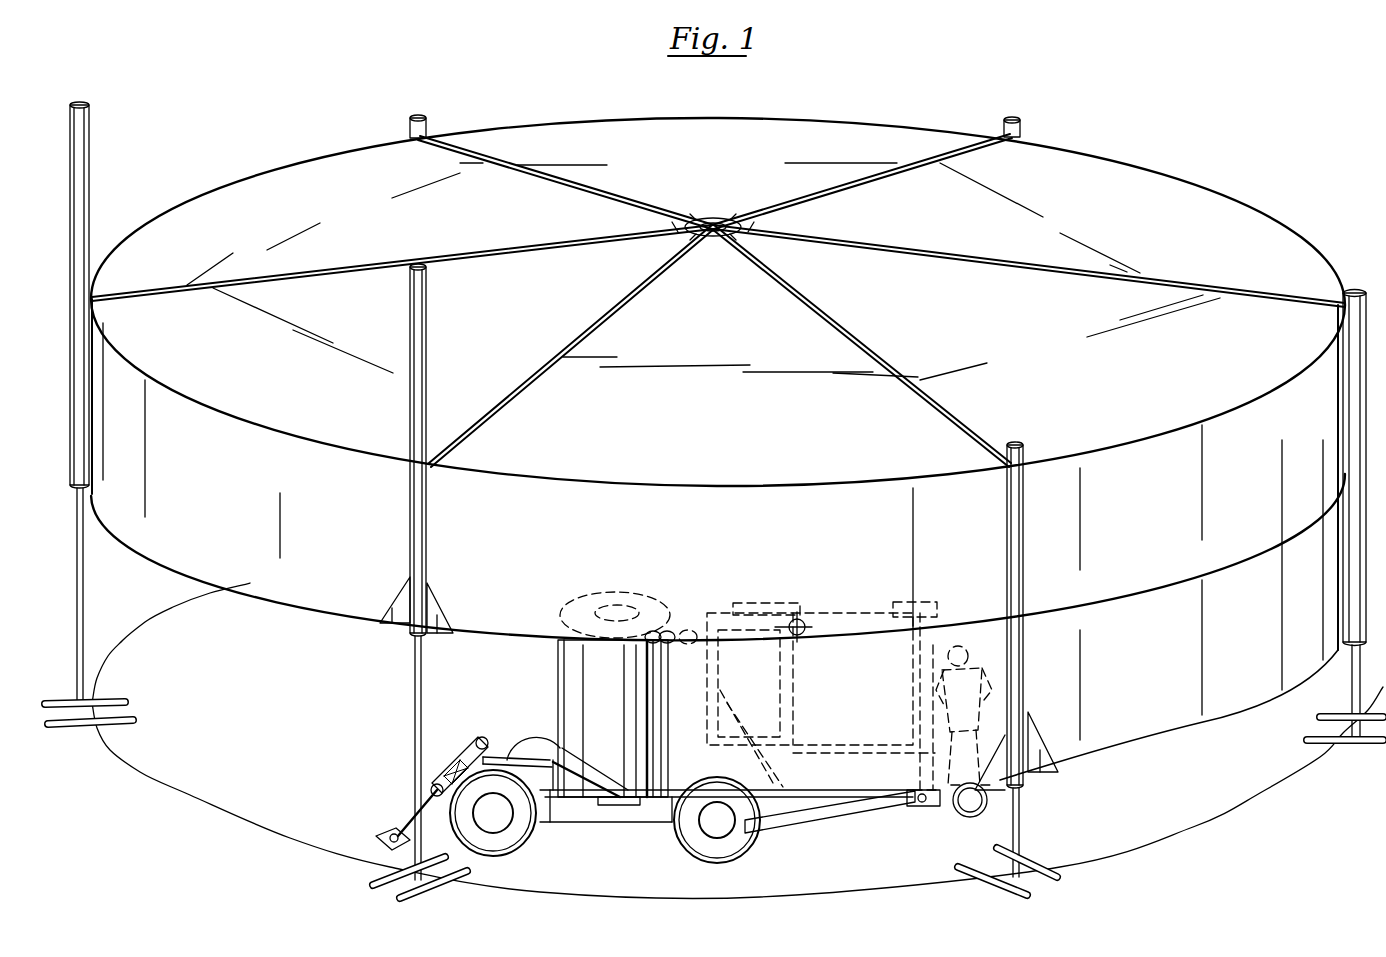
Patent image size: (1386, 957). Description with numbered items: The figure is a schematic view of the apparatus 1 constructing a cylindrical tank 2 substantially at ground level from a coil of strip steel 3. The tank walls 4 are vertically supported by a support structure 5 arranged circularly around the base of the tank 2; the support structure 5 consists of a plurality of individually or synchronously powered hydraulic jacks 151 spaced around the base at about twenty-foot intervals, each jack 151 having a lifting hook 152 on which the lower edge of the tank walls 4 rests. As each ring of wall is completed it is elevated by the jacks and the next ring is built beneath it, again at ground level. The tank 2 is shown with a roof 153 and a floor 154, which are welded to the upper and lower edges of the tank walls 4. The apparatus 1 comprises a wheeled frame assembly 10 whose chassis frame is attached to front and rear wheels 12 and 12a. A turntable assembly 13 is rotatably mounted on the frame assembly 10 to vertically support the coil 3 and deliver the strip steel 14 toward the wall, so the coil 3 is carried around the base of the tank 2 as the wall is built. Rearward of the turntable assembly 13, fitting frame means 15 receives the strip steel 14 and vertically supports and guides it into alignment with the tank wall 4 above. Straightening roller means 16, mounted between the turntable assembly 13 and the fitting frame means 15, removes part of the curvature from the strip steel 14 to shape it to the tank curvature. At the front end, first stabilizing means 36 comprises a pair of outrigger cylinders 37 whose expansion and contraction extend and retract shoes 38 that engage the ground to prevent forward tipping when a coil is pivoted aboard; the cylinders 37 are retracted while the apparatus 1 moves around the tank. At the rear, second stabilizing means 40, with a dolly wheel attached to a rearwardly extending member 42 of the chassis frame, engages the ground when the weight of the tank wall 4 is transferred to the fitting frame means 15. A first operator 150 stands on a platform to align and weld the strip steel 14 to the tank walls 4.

The apparatus 1 is at (862, 605).
The cylindrical tank 2 is at (286, 141).
The coil of strip steel 3 is at (594, 604).
The tank walls 4 is at (1146, 490).
The support structure 5 is at (1345, 590).
The wheeled frame assembly 10 is at (586, 820).
The front wheels 12 is at (512, 852).
The rear wheels 12a is at (708, 858).
The turntable assembly 13 is at (603, 800).
The strip steel 14 is at (880, 727).
The fitting frame means 15 is at (814, 624).
The straightening roller means 16 is at (682, 630).
The first stabilizing means 36 is at (421, 777).
The outrigger cylinders 37 is at (470, 742).
The shoes 38 is at (384, 834).
The second stabilizing means 40 is at (956, 810).
The rearwardly extending member 42 is at (814, 818).
The first operator 150 is at (1000, 650).
The hydraulic jacks 151 is at (433, 506).
The lifting hook 152 is at (440, 596).
The roof 153 is at (1128, 178).
The floor 154 is at (1200, 818).